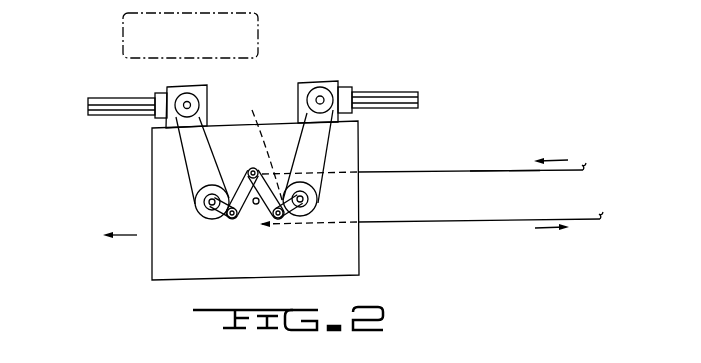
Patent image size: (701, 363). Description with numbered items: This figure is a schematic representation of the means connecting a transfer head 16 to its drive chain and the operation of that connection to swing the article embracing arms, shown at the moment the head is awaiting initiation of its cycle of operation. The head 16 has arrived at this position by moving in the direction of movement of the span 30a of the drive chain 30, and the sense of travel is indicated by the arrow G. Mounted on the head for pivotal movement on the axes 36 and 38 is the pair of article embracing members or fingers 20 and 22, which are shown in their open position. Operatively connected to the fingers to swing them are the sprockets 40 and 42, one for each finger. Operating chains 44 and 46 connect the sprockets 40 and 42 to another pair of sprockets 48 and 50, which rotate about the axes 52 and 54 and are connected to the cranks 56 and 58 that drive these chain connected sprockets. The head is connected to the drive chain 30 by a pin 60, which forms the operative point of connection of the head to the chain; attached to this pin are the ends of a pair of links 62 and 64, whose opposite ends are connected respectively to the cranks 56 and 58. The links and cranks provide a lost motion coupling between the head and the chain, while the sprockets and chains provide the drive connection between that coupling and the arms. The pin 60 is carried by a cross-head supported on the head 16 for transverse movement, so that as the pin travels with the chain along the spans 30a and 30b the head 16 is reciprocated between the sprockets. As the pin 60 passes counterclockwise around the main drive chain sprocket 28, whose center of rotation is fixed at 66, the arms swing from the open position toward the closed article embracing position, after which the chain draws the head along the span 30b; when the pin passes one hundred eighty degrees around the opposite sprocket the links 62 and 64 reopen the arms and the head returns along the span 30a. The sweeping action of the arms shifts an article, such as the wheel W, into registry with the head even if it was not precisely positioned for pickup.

The transfer head 16 is at (170, 181).
The article embracing finger 20 is at (405, 93).
The article embracing finger 22 is at (99, 103).
The main drive chain sprocket 28 is at (264, 128).
The drive chain 30 is at (489, 163).
The span of the drive chain 30a is at (585, 168).
The span of the drive chain 30b is at (510, 228).
The pivot axis 36 is at (197, 104).
The pivot axis 38 is at (320, 98).
The sprocket 40 is at (181, 102).
The sprocket 42 is at (331, 94).
The operating chain 44 is at (181, 152).
The operating chain 46 is at (330, 146).
The sprocket 48 is at (202, 218).
The sprocket 50 is at (331, 193).
The axis of rotation 52 is at (207, 203).
The axis of rotation 54 is at (298, 194).
The crank 56 is at (224, 218).
The crank 58 is at (304, 208).
The pin 60 is at (254, 171).
The link 62 is at (250, 183).
The link 64 is at (255, 214).
The center of rotation 66 is at (254, 204).
The wheel W is at (191, 47).
The arrow G is at (120, 244).